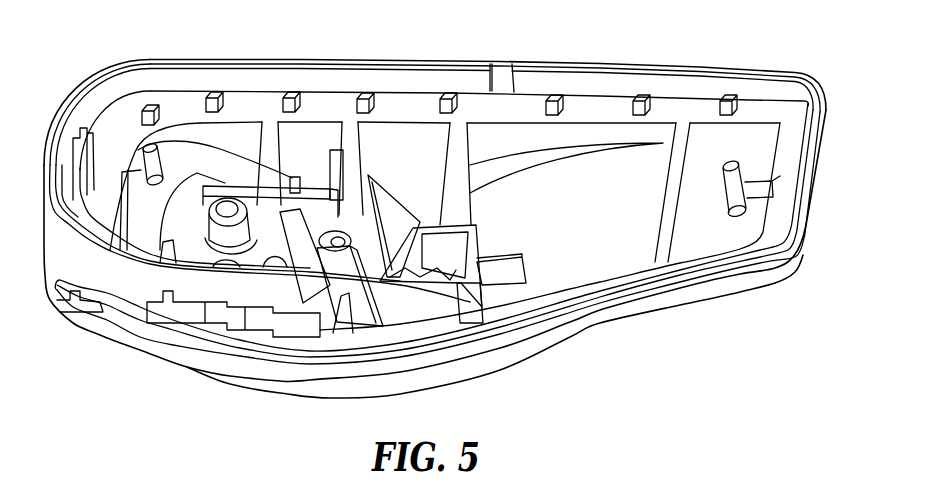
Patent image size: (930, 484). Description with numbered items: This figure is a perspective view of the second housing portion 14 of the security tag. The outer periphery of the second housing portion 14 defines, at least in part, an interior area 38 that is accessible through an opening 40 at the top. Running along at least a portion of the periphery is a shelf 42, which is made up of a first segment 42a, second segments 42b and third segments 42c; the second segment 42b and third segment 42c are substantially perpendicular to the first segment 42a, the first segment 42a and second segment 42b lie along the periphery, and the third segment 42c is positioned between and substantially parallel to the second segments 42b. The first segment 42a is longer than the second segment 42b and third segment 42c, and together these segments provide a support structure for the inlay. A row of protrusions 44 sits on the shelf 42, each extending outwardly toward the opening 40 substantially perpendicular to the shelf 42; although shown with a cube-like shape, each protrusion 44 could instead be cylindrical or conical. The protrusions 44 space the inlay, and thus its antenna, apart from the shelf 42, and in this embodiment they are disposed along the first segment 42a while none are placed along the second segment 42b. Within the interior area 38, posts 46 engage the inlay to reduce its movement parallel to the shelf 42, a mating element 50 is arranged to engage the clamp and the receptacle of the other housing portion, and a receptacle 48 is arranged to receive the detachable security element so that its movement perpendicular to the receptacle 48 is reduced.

The second housing portion 14 is at (705, 50).
The interior area 38 is at (508, 147).
The opening 40 is at (332, 77).
The shelf 42 is at (787, 113).
The first segment 42a is at (412, 112).
The second segment 42b is at (105, 187).
The third segment 42c is at (667, 202).
The protrusion 44 is at (151, 105).
The post 46 is at (727, 178).
The receptacle 48 is at (340, 242).
The mating element 50 is at (228, 205).